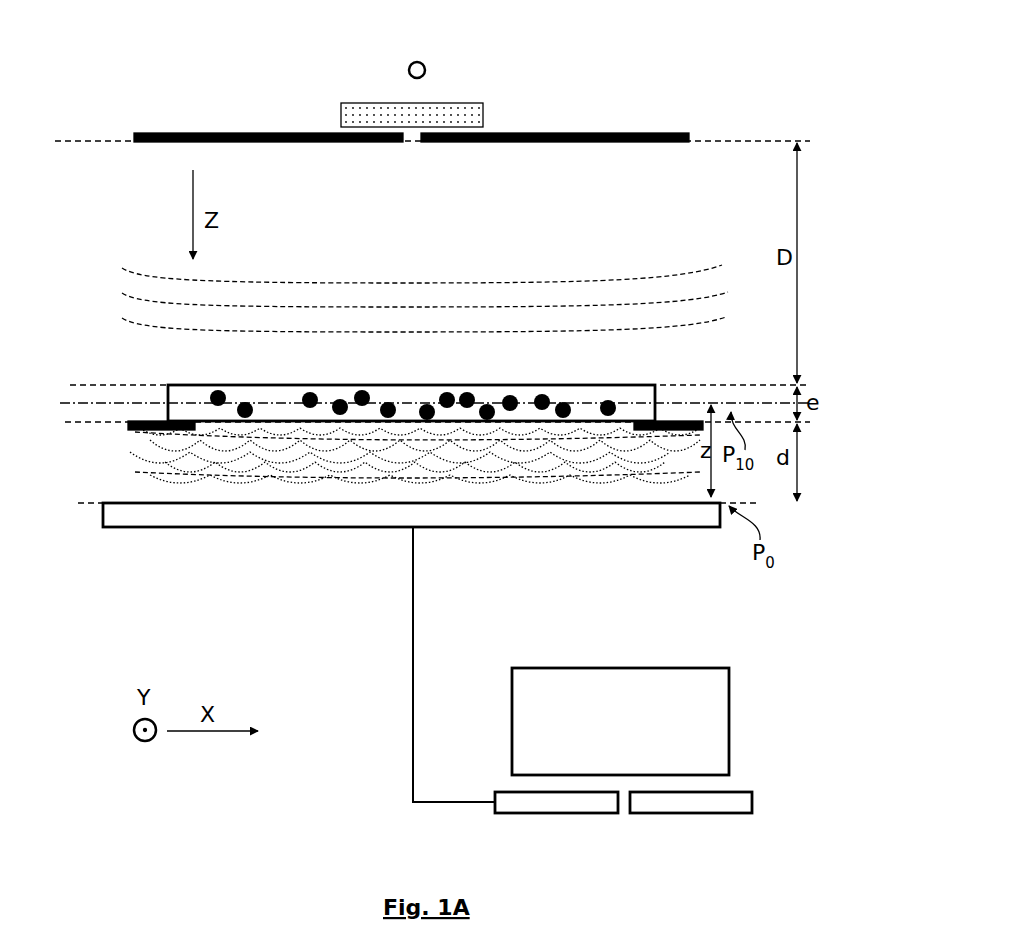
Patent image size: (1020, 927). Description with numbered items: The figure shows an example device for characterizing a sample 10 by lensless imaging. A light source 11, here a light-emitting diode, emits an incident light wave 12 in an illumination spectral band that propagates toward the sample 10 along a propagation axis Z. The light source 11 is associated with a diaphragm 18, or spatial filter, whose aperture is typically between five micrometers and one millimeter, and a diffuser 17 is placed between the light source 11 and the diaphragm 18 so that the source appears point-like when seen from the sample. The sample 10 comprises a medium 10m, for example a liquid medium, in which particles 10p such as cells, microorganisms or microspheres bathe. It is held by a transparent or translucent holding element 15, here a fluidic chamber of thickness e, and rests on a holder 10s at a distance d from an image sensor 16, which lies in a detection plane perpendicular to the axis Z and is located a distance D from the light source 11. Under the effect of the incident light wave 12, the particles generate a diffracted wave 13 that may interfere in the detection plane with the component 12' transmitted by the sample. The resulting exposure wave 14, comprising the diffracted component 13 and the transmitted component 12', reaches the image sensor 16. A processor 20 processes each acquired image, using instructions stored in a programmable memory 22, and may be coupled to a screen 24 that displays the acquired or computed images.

The sample 10 is at (424, 415).
The medium 10m is at (294, 392).
The particles 10p is at (456, 392).
The holder 10s is at (160, 434).
The light source 11 is at (404, 65).
The incident light wave 12 is at (398, 296).
The transmitted component of the incident light wave 12' is at (417, 504).
The diffracted wave 13 is at (278, 468).
The exposure wave 14 is at (415, 525).
The holding element 15 is at (660, 400).
The image sensor 16 is at (692, 523).
The diffuser 17 is at (460, 118).
The diaphragm 18 is at (692, 141).
The processor 20 is at (550, 806).
The programmable memory 22 is at (670, 806).
The screen 24 is at (712, 695).